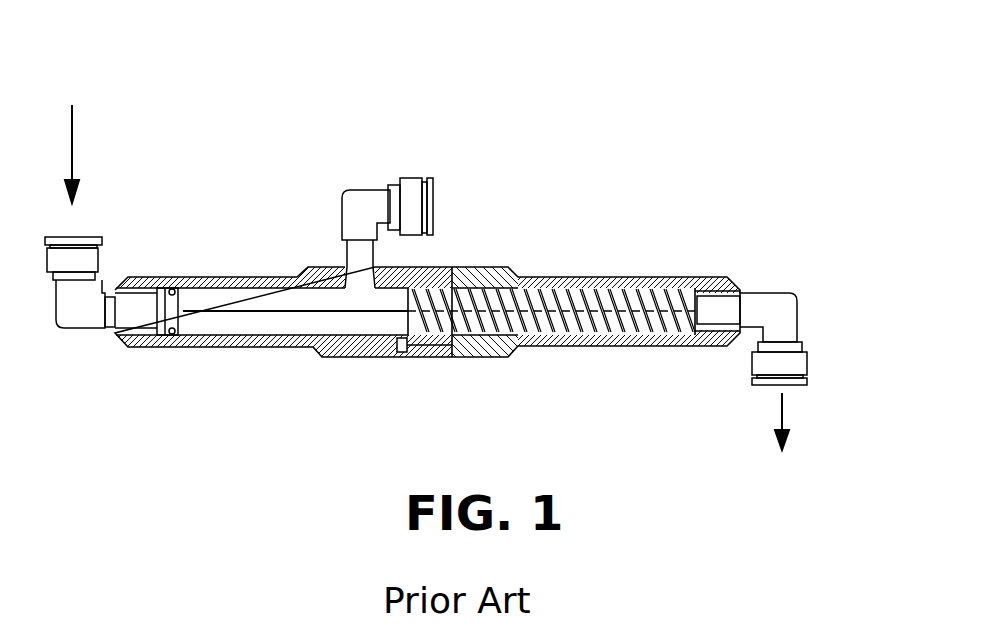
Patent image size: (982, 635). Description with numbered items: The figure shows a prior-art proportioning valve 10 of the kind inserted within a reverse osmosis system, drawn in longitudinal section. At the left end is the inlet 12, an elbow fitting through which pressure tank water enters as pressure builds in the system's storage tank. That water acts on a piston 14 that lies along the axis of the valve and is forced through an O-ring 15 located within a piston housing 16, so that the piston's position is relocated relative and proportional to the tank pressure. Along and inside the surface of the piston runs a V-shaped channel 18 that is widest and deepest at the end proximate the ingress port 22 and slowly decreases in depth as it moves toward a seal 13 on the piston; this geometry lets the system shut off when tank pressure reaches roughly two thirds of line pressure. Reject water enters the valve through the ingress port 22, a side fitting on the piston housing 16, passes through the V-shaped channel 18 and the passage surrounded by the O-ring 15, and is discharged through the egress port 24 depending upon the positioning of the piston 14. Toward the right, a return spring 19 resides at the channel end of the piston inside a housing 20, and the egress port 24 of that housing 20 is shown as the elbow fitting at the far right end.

The proportioning valve 10 is at (561, 100).
The inlet 12 is at (76, 236).
The seal 13 is at (173, 290).
The piston 14 is at (237, 328).
The O-ring 15 is at (401, 350).
The piston housing 16 is at (396, 266).
The channel 18 is at (292, 311).
The return spring 19 is at (668, 292).
The housing 20 is at (633, 275).
The ingress port 22 is at (463, 205).
The egress port 24 is at (797, 364).